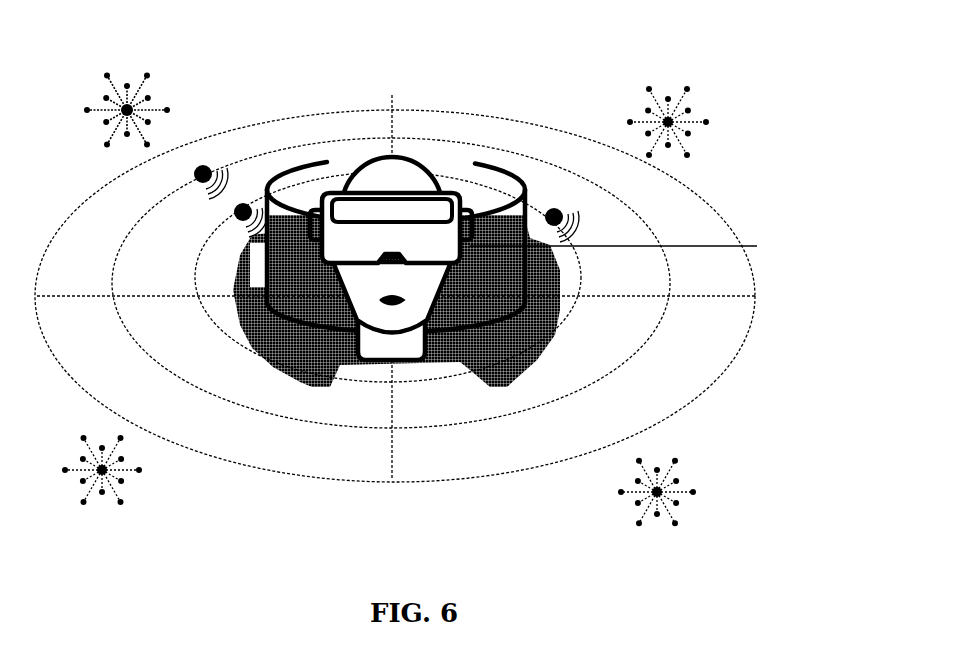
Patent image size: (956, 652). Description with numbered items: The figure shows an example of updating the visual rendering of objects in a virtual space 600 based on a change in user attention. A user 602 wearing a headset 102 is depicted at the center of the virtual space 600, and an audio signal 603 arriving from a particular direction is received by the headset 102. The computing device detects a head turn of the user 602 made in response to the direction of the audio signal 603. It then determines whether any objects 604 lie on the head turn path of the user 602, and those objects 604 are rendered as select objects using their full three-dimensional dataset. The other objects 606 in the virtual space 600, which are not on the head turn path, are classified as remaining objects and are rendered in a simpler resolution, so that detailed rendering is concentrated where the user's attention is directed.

The virtual space 600 is at (776, 132).
The user 602 is at (396, 214).
The headset 102 is at (330, 193).
The audio signal 603 is at (201, 165).
The objects 604 is at (100, 118).
The other objects 606 is at (683, 492).